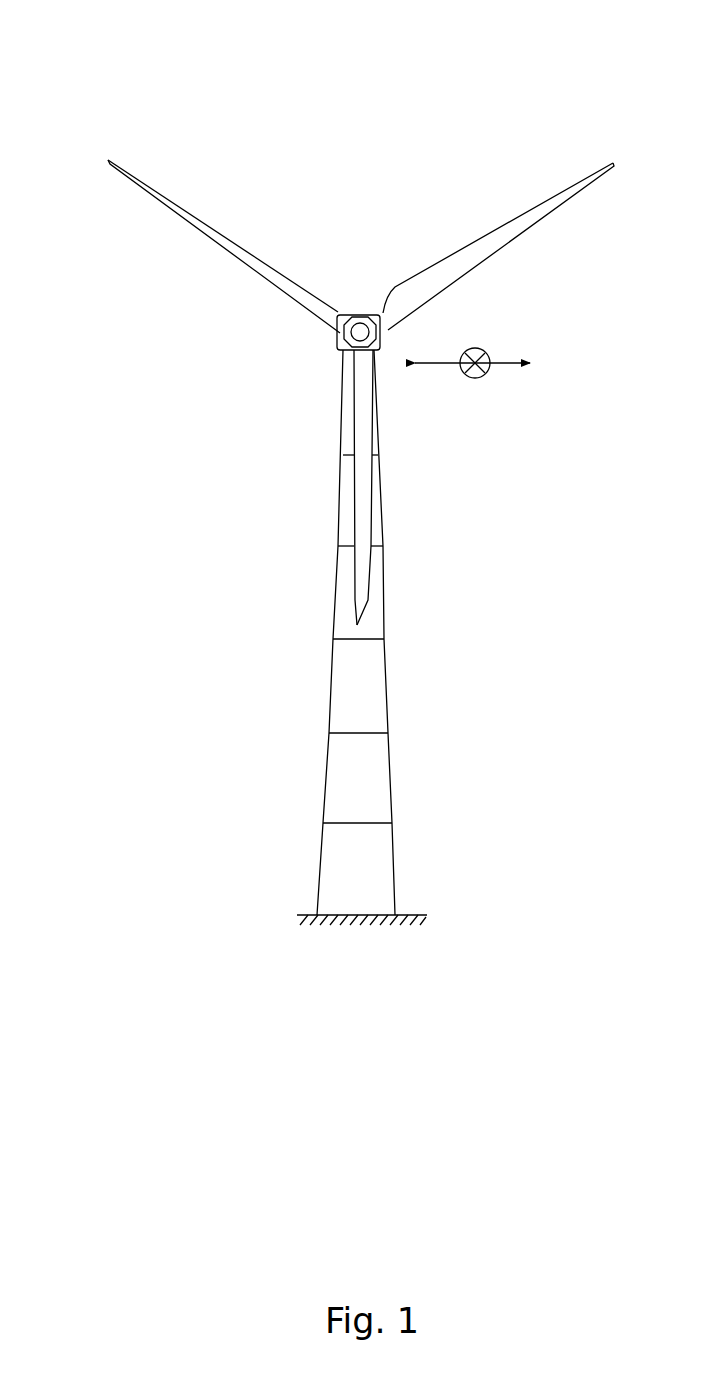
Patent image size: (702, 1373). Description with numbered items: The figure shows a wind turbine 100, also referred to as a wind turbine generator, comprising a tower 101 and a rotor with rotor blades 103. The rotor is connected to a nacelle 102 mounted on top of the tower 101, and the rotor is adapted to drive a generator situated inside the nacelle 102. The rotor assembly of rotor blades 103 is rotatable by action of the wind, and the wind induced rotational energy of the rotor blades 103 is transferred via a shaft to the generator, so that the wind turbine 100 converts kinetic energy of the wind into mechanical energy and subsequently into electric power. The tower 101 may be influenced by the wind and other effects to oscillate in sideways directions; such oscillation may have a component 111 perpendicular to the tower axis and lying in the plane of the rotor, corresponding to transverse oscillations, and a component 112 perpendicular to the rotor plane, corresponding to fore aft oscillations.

The wind turbine 100 is at (88, 62).
The tower 101 is at (327, 580).
The nacelle 102 is at (357, 303).
The rotor blade 103 is at (523, 196).
The oscillation component perpendicular to the tower axis and lying in the rotor pla 111 is at (480, 380).
The oscillation component perpendicular to the rotor plane 112 is at (480, 350).